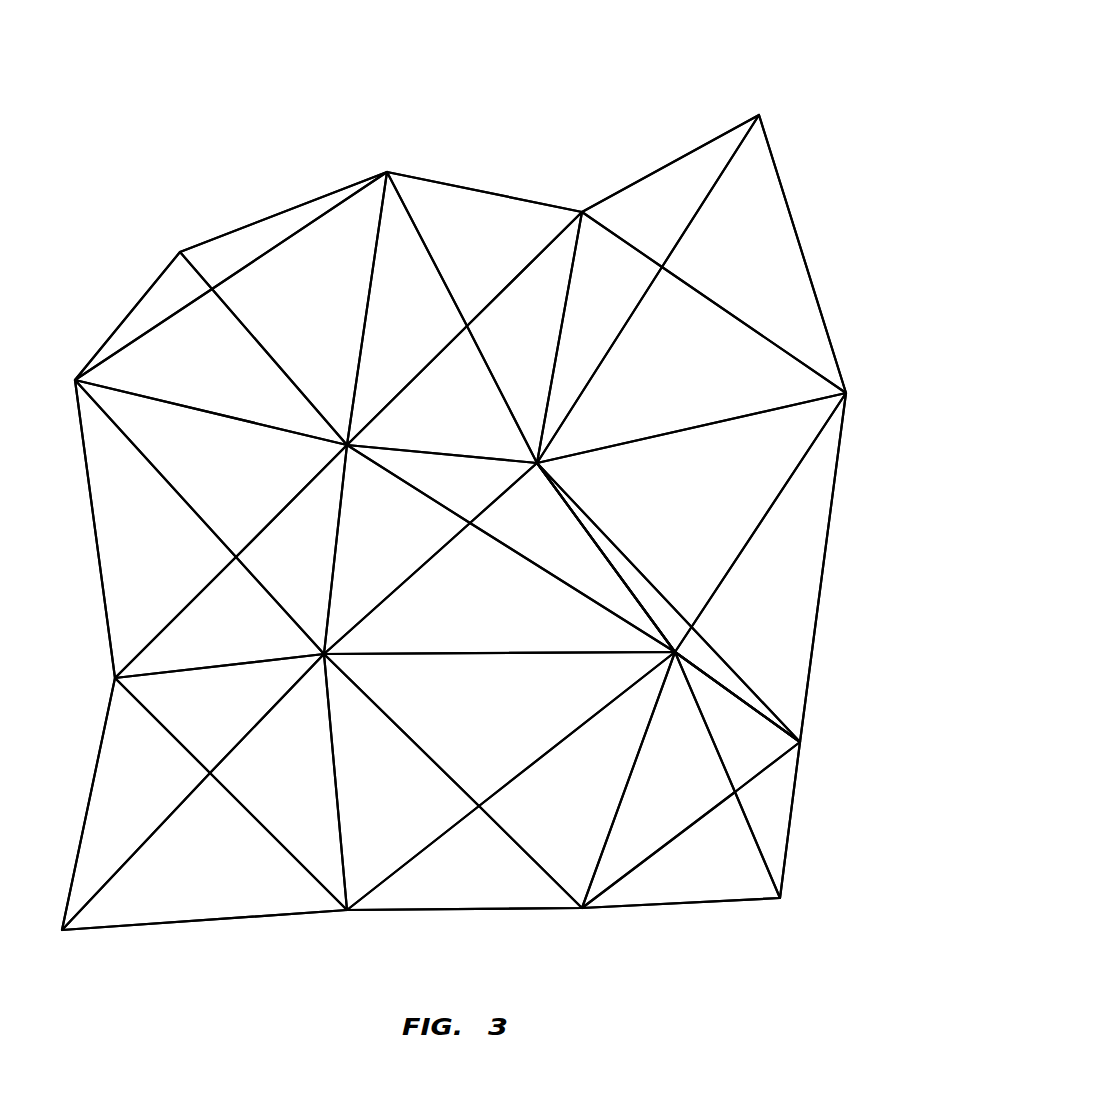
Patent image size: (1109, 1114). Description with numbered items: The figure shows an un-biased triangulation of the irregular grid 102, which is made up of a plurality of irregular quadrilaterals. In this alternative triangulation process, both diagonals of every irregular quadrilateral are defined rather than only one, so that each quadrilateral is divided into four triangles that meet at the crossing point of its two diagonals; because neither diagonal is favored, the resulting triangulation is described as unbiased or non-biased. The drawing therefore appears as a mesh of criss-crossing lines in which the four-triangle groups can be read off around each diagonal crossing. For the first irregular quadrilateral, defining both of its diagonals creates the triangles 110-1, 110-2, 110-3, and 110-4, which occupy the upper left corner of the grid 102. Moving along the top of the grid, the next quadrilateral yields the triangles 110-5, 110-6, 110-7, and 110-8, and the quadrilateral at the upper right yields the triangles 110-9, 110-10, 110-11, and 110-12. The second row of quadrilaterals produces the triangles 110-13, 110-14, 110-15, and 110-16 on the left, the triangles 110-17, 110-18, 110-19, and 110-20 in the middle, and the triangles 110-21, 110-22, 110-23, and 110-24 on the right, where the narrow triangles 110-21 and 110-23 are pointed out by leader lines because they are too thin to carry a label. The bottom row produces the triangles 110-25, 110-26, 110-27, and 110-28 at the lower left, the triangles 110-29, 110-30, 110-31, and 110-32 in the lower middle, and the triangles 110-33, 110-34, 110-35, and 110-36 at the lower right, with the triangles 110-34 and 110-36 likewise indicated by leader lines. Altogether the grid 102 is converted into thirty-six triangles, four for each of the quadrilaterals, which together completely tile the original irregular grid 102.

The irregular grid 102 is at (692, 103).
The triangle 110-1 is at (165, 295).
The triangle 110-2 is at (240, 248).
The triangle 110-3 is at (228, 378).
The triangle 110-4 is at (334, 302).
The triangle 110-5 is at (431, 329).
The triangle 110-6 is at (504, 252).
The triangle 110-7 is at (479, 417).
The triangle 110-8 is at (543, 338).
The triangle 110-9 is at (631, 298).
The triangle 110-10 is at (686, 220).
The triangle 110-11 is at (717, 378).
The triangle 110-12 is at (777, 260).
The triangle 110-13 is at (185, 558).
The triangle 110-14 is at (265, 485).
The triangle 110-15 is at (262, 635).
The triangle 110-16 is at (323, 567).
The triangle 110-17 is at (422, 533).
The triangle 110-18 is at (498, 492).
The triangle 110-19 is at (508, 610).
The triangle 110-20 is at (560, 530).
The triangle 110-21 is at (653, 600).
The triangle 110-22 is at (715, 508).
The triangle 110-23 is at (707, 659).
The triangle 110-24 is at (798, 612).
The triangle 110-25 is at (173, 785).
The triangle 110-26 is at (240, 710).
The triangle 110-27 is at (250, 868).
The triangle 110-28 is at (313, 785).
The triangle 110-29 is at (422, 798).
The triangle 110-30 is at (513, 720).
The triangle 110-31 is at (505, 877).
The triangle 110-32 is at (597, 812).
The triangle 110-33 is at (708, 778).
The triangle 110-34 is at (750, 738).
The triangle 110-35 is at (737, 877).
The triangle 110-36 is at (770, 810).